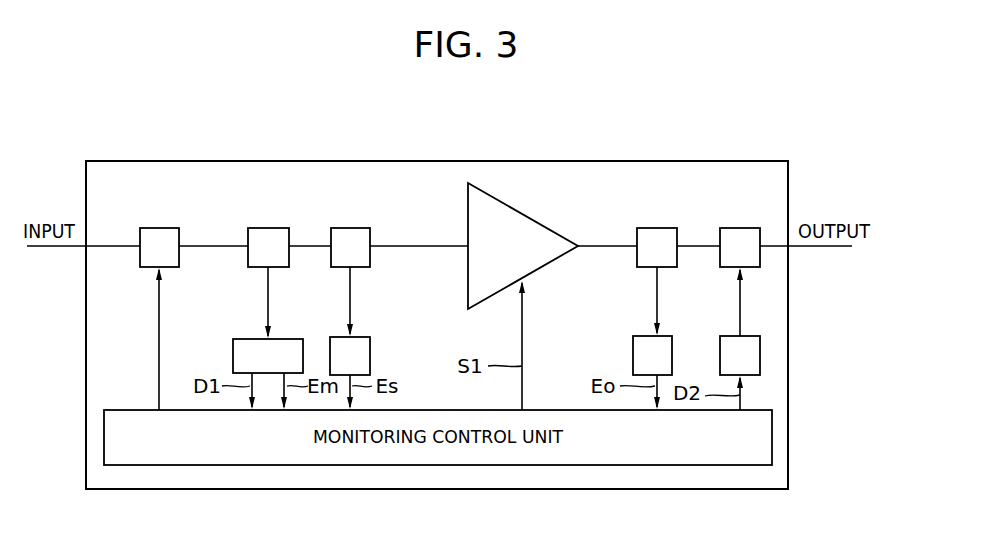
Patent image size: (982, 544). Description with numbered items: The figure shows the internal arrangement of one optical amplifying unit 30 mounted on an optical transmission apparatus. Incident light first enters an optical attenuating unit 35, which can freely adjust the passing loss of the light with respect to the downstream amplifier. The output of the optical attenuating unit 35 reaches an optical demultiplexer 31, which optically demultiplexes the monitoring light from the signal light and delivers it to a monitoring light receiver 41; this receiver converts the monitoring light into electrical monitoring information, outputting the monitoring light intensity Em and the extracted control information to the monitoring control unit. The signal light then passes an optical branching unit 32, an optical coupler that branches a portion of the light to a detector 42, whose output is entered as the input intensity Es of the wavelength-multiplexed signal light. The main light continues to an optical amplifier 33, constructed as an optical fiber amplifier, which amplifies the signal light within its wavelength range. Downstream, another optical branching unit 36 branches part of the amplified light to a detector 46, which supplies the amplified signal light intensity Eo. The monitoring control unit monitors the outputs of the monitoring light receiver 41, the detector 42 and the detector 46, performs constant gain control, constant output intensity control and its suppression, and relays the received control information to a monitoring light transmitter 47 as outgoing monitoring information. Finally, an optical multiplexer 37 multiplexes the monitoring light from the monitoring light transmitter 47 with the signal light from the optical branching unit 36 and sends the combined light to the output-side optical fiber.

The optical amplifying unit 30 is at (437, 299).
The optical demultiplexer 31 is at (265, 228).
The optical branching unit 32 is at (350, 228).
The optical amplifier 33 is at (526, 216).
The optical attenuating unit 35 is at (157, 228).
The optical branching unit 36 is at (656, 228).
The optical multiplexer 37 is at (744, 228).
The monitoring light receiver 41 is at (233, 348).
The detector 42 is at (370, 350).
The detector 46 is at (646, 336).
The monitoring light transmitter 47 is at (730, 336).